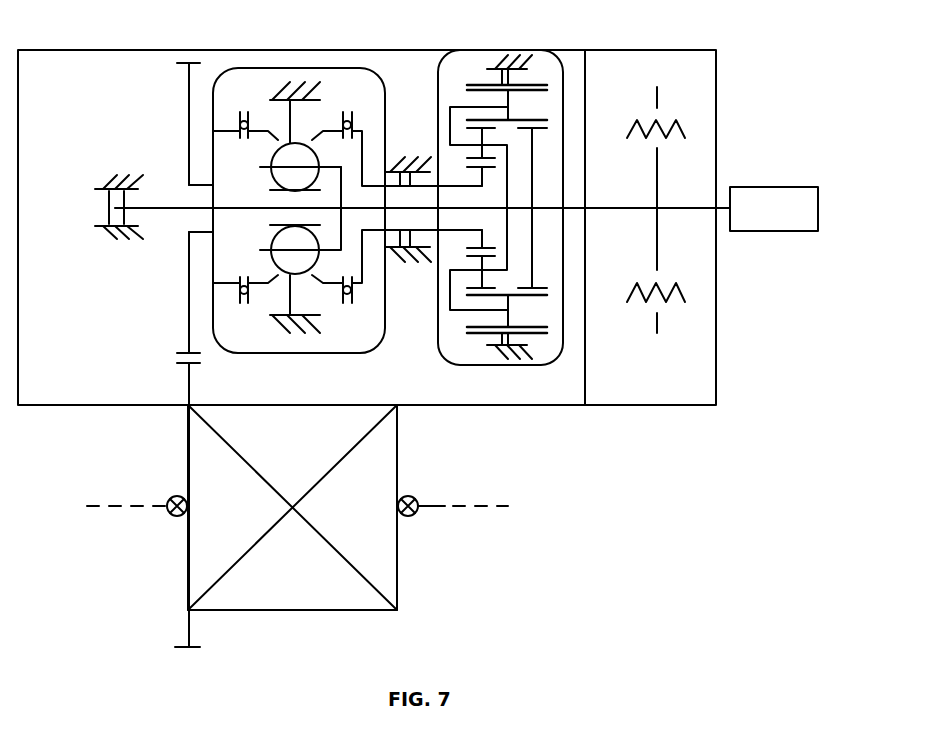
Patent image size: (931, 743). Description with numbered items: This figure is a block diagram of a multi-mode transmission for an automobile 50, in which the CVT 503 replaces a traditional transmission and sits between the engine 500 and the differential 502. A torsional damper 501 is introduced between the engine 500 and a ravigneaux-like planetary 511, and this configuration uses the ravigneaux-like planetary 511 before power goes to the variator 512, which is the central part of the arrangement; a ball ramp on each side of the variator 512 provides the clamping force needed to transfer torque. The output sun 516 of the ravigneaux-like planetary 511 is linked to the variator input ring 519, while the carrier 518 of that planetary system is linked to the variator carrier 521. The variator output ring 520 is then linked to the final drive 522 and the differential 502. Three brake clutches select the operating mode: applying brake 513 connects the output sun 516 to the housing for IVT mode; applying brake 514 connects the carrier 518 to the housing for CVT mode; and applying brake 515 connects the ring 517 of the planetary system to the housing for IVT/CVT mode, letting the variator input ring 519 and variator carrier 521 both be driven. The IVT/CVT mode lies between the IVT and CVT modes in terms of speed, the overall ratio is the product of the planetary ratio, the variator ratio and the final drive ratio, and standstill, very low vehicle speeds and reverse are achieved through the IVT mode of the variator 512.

The automobile 50 is at (577, 542).
The engine 500 is at (805, 185).
The torsional damper 501 is at (688, 47).
The differential 502 is at (238, 611).
The CVT 503 is at (419, 213).
The ravigneaux-like planetary 511 is at (438, 85).
The variator 512 is at (249, 70).
The brake clutch for IVT mode 513 is at (405, 157).
The brake clutch for CVT mode 514 is at (112, 173).
The brake clutch for IVT/CVT mode 515 is at (490, 352).
The output sun 516 is at (458, 186).
The ring 517 is at (547, 333).
The carrier 518 is at (533, 230).
The variator input ring 519 is at (331, 137).
The variator output ring 520 is at (258, 131).
The variator carrier 521 is at (345, 250).
The final drive 522 is at (189, 390).